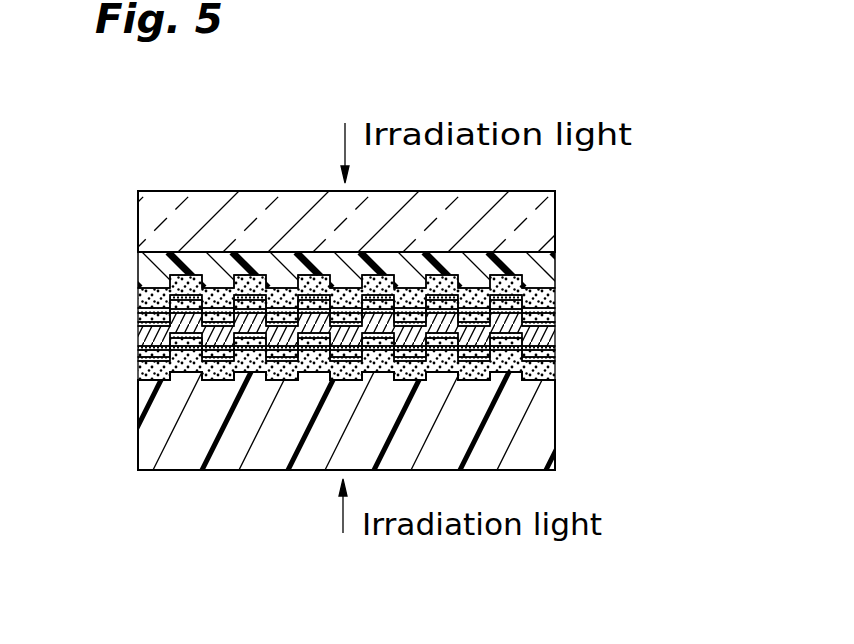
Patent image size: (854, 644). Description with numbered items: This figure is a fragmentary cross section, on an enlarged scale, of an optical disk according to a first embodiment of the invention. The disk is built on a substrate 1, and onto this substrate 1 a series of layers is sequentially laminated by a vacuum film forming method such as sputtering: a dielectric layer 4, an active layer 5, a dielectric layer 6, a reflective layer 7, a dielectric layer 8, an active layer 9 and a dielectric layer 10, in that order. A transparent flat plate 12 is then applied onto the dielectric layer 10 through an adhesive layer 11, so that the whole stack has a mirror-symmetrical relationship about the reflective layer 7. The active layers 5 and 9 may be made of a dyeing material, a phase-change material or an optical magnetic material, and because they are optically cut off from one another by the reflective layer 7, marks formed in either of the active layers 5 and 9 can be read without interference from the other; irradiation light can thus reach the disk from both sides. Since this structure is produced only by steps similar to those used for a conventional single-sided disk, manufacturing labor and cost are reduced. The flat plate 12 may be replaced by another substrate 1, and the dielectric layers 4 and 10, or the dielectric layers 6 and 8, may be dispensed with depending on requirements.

The substrate 1 is at (163, 423).
The dielectric layer 4 is at (138, 372).
The active layer 5 is at (138, 360).
The dielectric layer 6 is at (138, 352).
The reflective layer 7 is at (555, 340).
The dielectric layer 8 is at (555, 318).
The active layer 9 is at (555, 305).
The dielectric layer 10 is at (555, 295).
The adhesive layer 11 is at (555, 258).
The transparent flat plate 12 is at (555, 203).